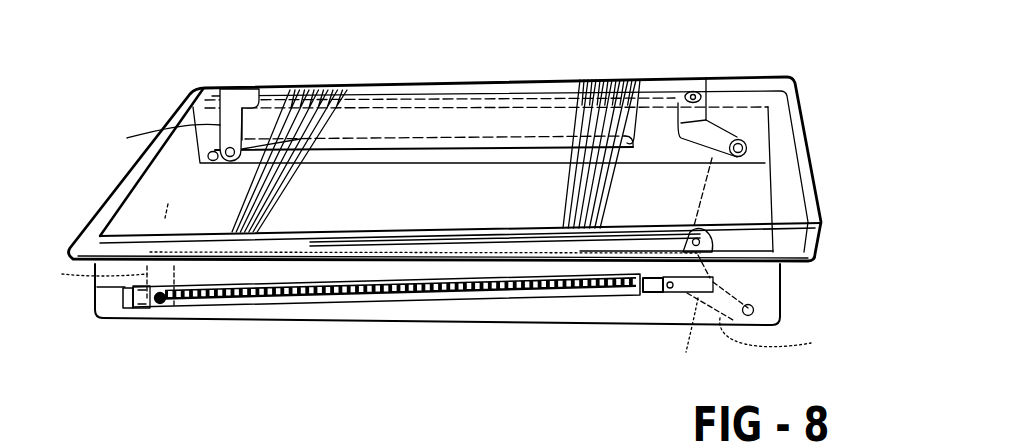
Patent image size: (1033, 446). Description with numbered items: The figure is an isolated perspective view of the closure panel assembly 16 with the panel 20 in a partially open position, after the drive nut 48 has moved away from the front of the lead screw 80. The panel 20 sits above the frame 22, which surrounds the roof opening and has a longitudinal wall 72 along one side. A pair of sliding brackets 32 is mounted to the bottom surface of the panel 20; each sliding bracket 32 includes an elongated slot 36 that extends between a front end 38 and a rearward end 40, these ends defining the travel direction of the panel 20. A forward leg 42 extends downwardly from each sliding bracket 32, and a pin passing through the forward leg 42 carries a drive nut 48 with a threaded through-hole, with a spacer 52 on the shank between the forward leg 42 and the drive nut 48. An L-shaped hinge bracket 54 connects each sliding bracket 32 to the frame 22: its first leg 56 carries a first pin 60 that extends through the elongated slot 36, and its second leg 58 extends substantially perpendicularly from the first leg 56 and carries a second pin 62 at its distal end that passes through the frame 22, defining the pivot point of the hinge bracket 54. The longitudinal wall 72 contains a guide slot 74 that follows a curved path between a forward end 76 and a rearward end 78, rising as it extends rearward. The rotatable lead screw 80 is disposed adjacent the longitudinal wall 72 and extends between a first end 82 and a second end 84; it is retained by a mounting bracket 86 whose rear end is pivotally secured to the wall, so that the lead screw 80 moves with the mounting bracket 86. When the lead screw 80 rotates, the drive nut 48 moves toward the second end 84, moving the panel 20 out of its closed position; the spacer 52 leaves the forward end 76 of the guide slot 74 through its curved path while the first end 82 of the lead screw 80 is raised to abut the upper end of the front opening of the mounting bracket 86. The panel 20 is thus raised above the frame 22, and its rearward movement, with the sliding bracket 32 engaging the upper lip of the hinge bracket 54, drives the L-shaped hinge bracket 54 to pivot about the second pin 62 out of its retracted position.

The closure panel assembly 16 is at (120, 90).
The panel 20 is at (795, 79).
The frame 22 is at (107, 318).
The sliding bracket 32 is at (253, 88).
The elongated slot 36 is at (433, 98).
The front end 38 is at (322, 88).
The rearward end 40 is at (708, 80).
The forward leg 42 is at (127, 208).
The drive nut 48 is at (160, 296).
The spacer 52 is at (167, 305).
The L-shaped hinge bracket 54 is at (735, 132).
The first leg 56 is at (678, 121).
The second leg 58 is at (710, 157).
The first pin 60 is at (687, 95).
The second pin 62 is at (748, 150).
The longitudinal wall 72 is at (493, 310).
The guide slot 74 is at (404, 143).
The forward end 76 is at (157, 307).
The rearward end 78 is at (638, 72).
The lead screw 80 is at (410, 300).
The first end 82 is at (143, 313).
The second end 84 is at (635, 292).
The mounting bracket 86 is at (100, 287).